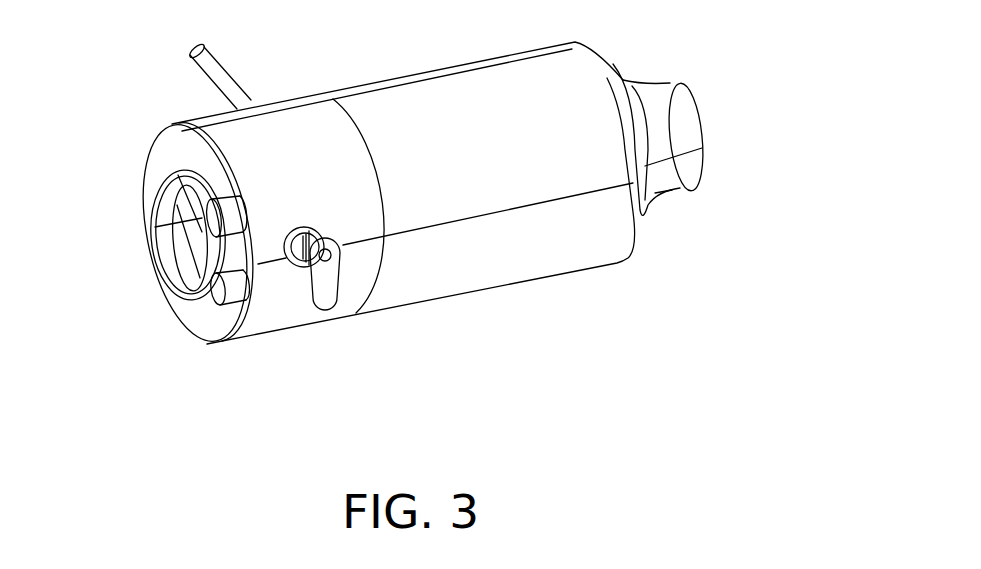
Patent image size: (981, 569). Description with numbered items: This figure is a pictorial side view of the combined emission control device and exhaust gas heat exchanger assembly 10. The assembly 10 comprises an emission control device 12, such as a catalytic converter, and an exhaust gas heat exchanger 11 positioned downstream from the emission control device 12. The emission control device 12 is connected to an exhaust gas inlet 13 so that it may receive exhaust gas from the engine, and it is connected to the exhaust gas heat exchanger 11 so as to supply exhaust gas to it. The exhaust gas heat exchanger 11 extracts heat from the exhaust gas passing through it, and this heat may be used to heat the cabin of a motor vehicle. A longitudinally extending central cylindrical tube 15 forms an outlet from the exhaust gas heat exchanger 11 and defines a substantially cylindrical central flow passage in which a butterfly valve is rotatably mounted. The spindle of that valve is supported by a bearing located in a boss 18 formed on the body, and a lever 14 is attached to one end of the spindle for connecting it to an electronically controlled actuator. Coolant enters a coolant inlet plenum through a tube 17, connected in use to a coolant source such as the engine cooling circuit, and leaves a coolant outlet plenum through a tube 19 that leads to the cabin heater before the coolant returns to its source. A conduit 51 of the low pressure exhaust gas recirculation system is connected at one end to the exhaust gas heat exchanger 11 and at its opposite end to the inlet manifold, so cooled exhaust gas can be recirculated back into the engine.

The combined emission control device and exhaust gas heat exchanger assembly 10 is at (196, 100).
The exhaust gas heat exchanger 11 is at (172, 125).
The emission control device 12 is at (547, 275).
The exhaust gas inlet 13 is at (658, 81).
The lever 14 is at (330, 300).
The central cylindrical tube 15 is at (150, 232).
The tube 17 is at (174, 290).
The boss 18 is at (305, 226).
The tube 19 is at (218, 303).
The conduit 51 is at (217, 57).